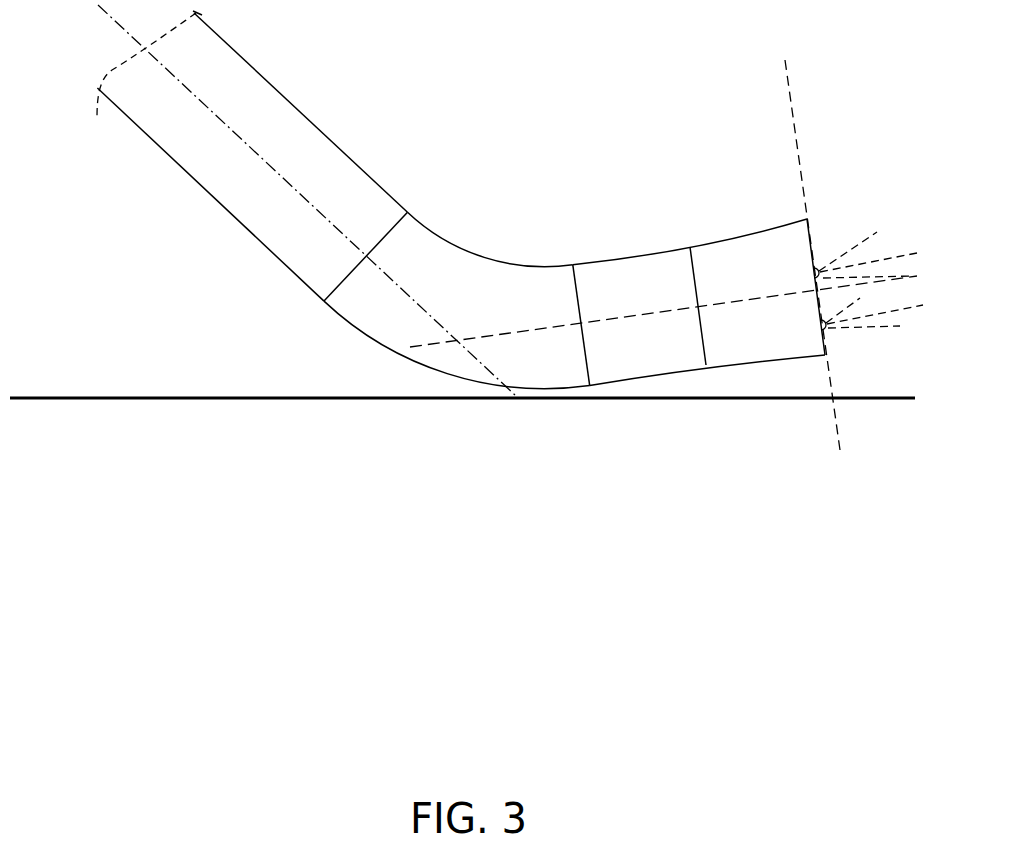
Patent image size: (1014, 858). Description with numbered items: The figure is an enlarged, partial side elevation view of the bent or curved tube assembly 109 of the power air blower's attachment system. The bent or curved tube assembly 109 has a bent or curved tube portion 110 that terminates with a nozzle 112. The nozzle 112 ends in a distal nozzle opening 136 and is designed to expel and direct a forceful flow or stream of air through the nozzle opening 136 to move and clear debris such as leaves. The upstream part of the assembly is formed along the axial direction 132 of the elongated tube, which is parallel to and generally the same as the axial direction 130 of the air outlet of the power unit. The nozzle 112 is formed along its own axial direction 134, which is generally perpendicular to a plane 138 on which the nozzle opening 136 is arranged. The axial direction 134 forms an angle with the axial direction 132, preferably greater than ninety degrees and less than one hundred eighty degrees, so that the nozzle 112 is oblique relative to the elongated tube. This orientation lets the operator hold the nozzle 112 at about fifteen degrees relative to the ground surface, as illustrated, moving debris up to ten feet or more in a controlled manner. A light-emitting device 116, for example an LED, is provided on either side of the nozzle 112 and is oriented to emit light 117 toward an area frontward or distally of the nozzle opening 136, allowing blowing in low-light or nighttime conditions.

The bent or curved tube assembly 109 is at (513, 200).
The bent or curved tube portion 110 is at (387, 187).
The nozzle 112 is at (825, 251).
The light-emitting device 116 is at (822, 267).
The light 117 is at (892, 259).
The axial direction of the air outlet 130 is at (306, 200).
The axial direction of the elongated tube 132 is at (254, 148).
The axial direction of the nozzle 134 is at (630, 316).
The nozzle opening 136 is at (820, 226).
The plane 138 is at (798, 148).